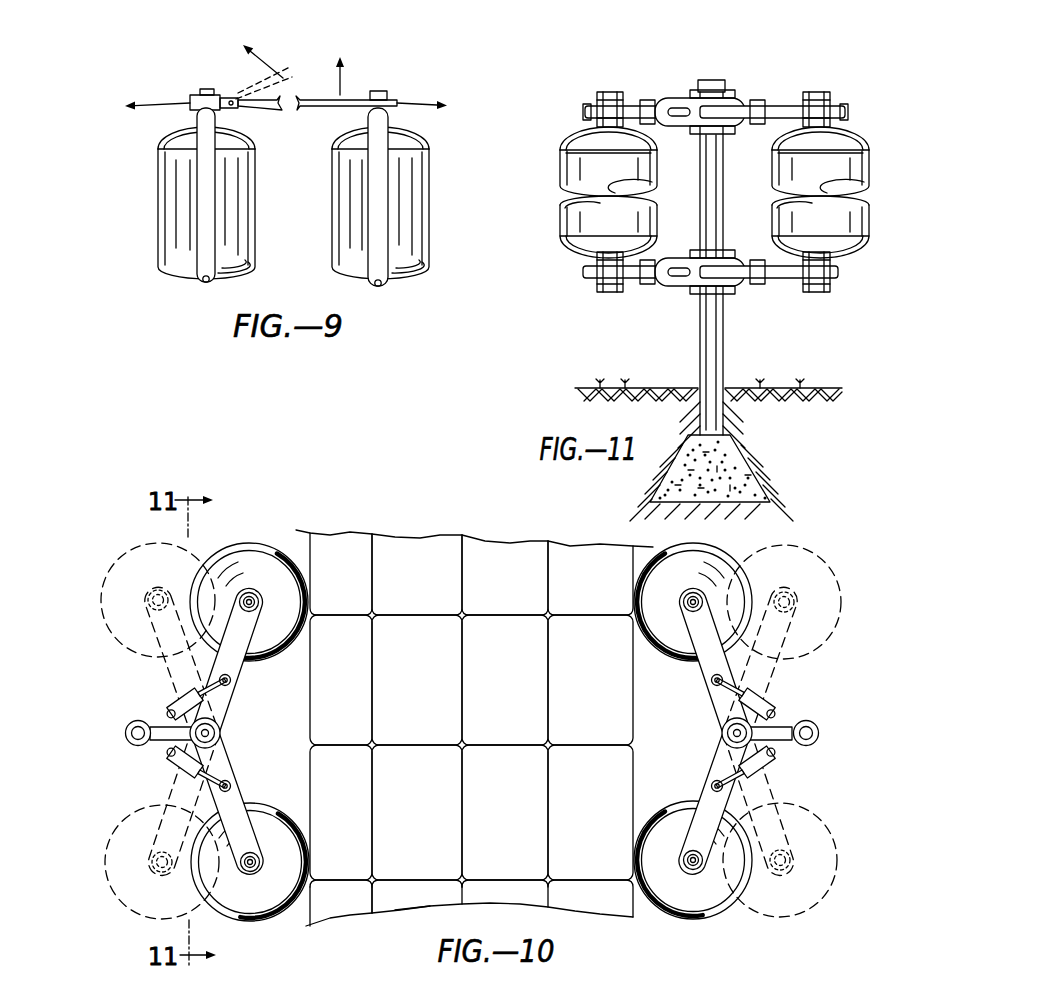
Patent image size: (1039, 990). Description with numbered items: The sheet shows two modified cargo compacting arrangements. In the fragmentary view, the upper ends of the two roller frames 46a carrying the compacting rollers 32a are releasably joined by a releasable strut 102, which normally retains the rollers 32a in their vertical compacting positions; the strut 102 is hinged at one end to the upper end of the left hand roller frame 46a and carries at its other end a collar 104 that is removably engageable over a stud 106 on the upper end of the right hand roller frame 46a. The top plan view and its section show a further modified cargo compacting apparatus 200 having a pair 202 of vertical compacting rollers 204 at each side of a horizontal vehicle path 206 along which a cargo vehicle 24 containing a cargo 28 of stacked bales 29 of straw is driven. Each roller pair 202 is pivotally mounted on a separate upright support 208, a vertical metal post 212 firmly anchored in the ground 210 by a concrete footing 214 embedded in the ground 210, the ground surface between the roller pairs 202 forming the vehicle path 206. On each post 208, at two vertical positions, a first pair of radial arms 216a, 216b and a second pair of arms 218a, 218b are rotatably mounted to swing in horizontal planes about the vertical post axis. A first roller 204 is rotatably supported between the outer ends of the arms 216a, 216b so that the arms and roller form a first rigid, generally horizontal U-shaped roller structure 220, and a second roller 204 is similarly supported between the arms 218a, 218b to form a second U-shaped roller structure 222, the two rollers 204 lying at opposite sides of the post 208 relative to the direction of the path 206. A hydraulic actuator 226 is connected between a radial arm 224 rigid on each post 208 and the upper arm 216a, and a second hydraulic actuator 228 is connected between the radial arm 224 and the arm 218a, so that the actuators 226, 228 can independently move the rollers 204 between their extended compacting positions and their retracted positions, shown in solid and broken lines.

In FIG. 9, the releasable strut 102 is at (318, 97).
In FIG. 9, the collar 104 is at (400, 100).
In FIG. 9, the stud 106 is at (379, 91).
In FIG. 9, the compacting rollers 32a is at (172, 193).
In FIG. 9, the roller frames 46a is at (192, 281).
In FIG. 10, the modified cargo compacting apparatus 200 is at (228, 494).
In FIG. 10, the pair of vertical compacting rollers 202 is at (116, 746).
In FIG. 11, the vertical compacting roller 204 is at (572, 222).
In FIG. 10, the vertical compacting roller 204 is at (148, 540).
In FIG. 10, the vehicle path 206 is at (463, 521).
In FIG. 11, the upright support 208 is at (735, 346).
In FIG. 10, the upright support 208 is at (222, 735).
In FIG. 11, the ground 210 is at (594, 386).
In FIG. 11, the post shaft 212 is at (705, 333).
In FIG. 11, the concrete footing 214 is at (735, 460).
In FIG. 11, the radial arm 216a is at (665, 102).
In FIG. 10, the radial arm 216a is at (240, 663).
In FIG. 11, the radial arm 216b is at (630, 282).
In FIG. 11, the radial arm 218a is at (770, 104).
In FIG. 10, the radial arm 218a is at (236, 798).
In FIG. 11, the radial arm 218b is at (790, 284).
In FIG. 11, the first U-shaped roller structure 220 is at (577, 110).
In FIG. 11, the second U-shaped roller structure 222 is at (852, 112).
In FIG. 10, the radial arm 224 is at (199, 717).
In FIG. 10, the hydraulic actuator 226 is at (168, 705).
In FIG. 10, the hydraulic cylinder 228 is at (168, 765).
In FIG. 10, the cargo vehicle 24 is at (418, 913).
In FIG. 10, the cargo 28 is at (368, 897).
In FIG. 10, the bales 29 is at (522, 893).